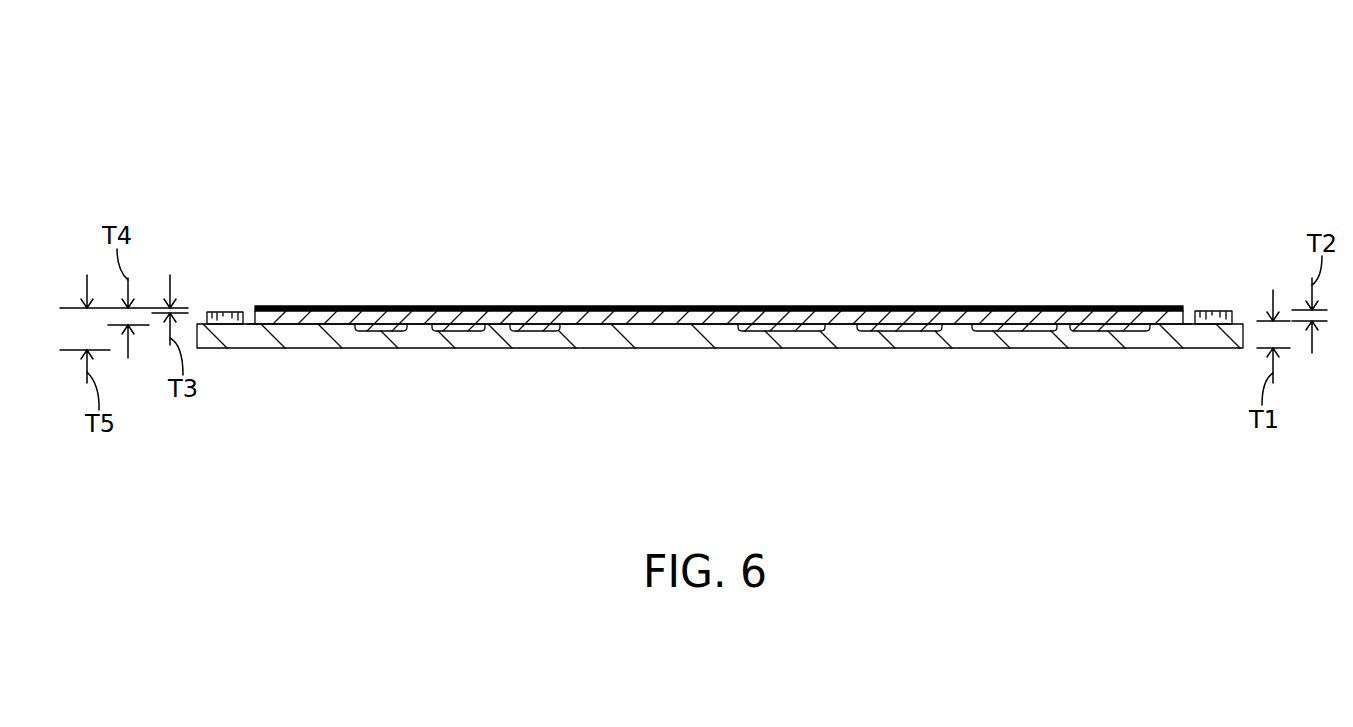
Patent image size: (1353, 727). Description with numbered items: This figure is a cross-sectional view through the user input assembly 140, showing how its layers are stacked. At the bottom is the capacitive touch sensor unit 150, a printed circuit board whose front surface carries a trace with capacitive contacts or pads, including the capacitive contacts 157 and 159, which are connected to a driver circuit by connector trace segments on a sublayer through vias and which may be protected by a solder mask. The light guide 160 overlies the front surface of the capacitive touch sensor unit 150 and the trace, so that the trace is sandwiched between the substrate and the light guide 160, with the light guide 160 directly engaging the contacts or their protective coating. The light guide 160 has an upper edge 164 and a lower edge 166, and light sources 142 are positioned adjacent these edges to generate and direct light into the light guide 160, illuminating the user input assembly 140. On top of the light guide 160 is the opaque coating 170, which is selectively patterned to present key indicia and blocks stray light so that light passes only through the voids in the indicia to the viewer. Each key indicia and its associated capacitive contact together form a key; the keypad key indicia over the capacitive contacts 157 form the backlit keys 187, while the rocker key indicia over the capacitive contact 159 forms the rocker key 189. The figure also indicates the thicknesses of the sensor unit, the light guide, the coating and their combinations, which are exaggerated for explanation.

The user input assembly 140 is at (783, 56).
The light sources 142 is at (223, 313).
The capacitive touch sensor unit 150 is at (663, 338).
The capacitive contacts 157 is at (800, 332).
The capacitive contacts 159 is at (370, 332).
The light guide 160 is at (530, 312).
The upper edge 164 is at (253, 319).
The lower edge 166 is at (1187, 318).
The opaque coating 170 is at (653, 307).
The keys 187 is at (792, 289).
The key 189 is at (405, 290).